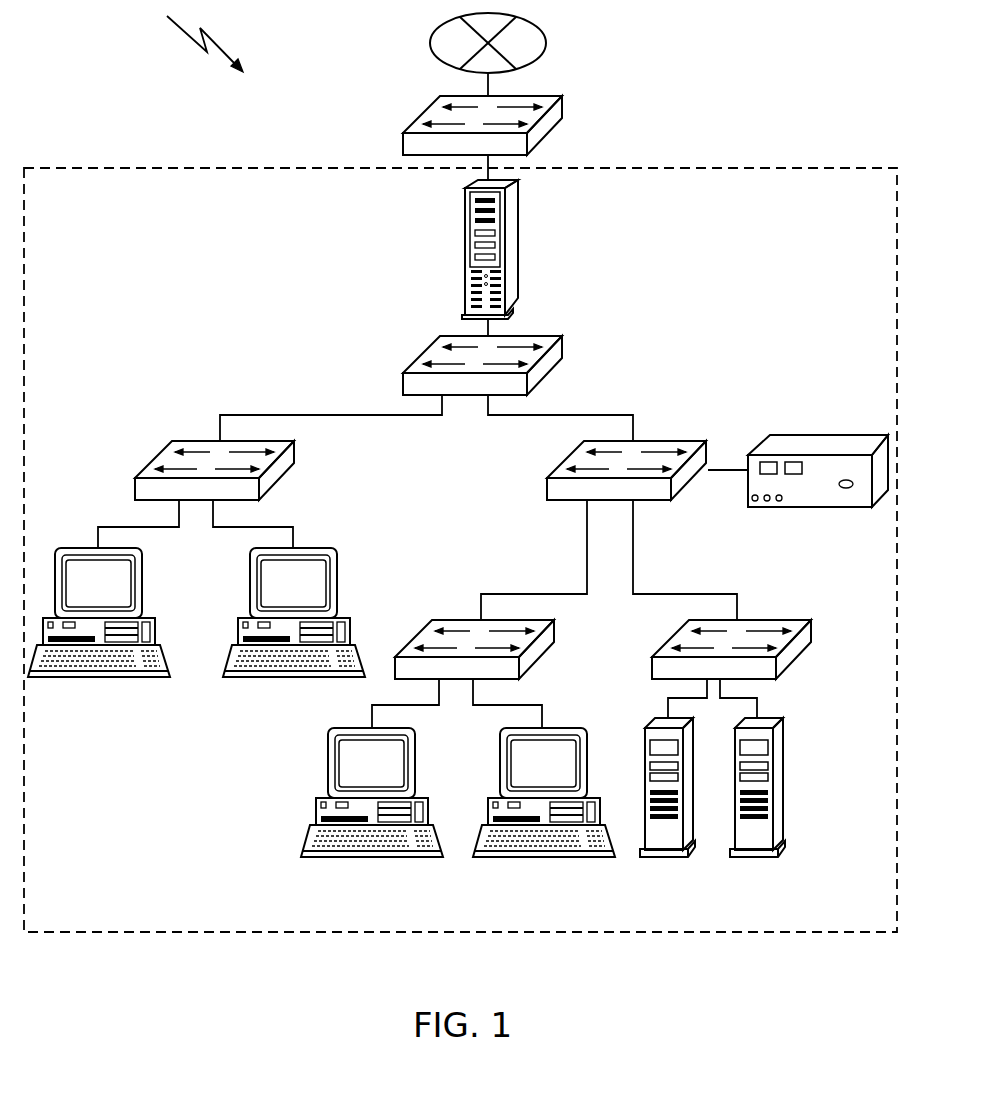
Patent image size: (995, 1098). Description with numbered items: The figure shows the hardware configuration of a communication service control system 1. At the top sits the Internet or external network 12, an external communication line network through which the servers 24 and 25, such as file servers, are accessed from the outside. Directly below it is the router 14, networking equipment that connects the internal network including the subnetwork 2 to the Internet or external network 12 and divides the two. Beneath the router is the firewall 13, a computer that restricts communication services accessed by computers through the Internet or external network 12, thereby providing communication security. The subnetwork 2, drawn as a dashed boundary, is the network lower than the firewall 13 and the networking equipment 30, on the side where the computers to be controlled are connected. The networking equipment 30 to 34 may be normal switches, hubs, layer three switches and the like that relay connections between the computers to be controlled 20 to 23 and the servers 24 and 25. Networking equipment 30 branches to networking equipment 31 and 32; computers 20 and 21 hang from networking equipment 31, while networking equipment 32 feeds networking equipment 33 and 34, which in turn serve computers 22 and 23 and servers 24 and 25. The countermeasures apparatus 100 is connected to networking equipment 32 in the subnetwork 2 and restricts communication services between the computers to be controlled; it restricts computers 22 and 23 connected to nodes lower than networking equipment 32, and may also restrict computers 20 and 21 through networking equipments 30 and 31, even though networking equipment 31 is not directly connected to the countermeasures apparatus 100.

The communication service control system 1 is at (199, 36).
The subnetwork 2 is at (100, 168).
The Internet or external network 12 is at (546, 42).
The firewall 13 is at (518, 245).
The router 14 is at (563, 108).
The computer to be controlled 20 is at (98, 677).
The computer to be controlled 21 is at (293, 677).
The computer to be controlled 22 is at (368, 855).
The computer to be controlled 23 is at (540, 855).
The server 24 is at (668, 857).
The server 25 is at (758, 857).
The networking equipment 30 is at (562, 348).
The networking equipment 31 is at (195, 440).
The networking equipment 32 is at (663, 441).
The networking equipment 33 is at (452, 620).
The networking equipment 34 is at (775, 620).
The countermeasures apparatus 100 is at (828, 437).